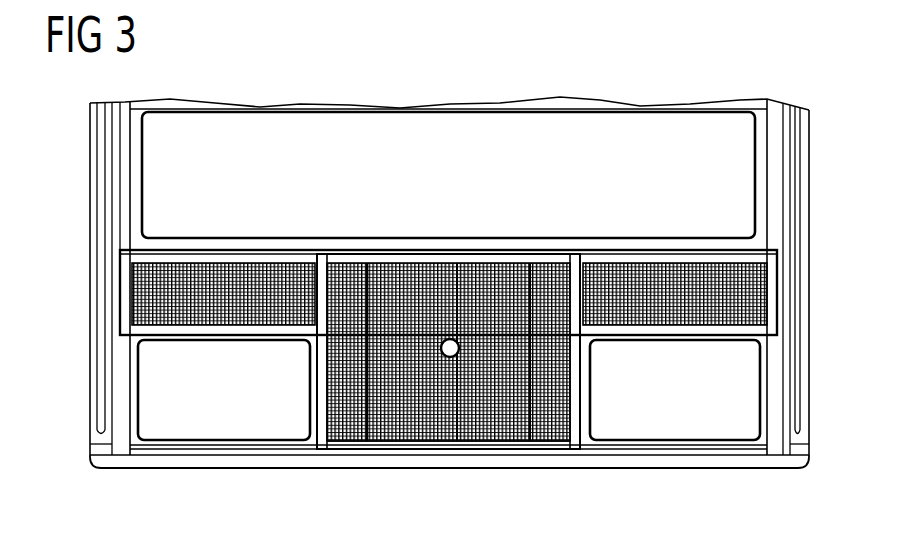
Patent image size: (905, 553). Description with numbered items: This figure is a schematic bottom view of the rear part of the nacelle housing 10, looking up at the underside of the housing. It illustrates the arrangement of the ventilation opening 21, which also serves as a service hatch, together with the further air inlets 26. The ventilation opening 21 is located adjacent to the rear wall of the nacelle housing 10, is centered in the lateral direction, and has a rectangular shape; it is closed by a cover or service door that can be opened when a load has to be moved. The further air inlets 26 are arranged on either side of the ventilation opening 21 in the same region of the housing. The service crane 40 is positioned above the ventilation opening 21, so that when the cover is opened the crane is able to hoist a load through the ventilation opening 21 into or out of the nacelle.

The nacelle housing 10 is at (155, 471).
The ventilation opening 21 is at (350, 422).
The further air inlets 26 is at (172, 292).
The service crane 40 is at (450, 357).